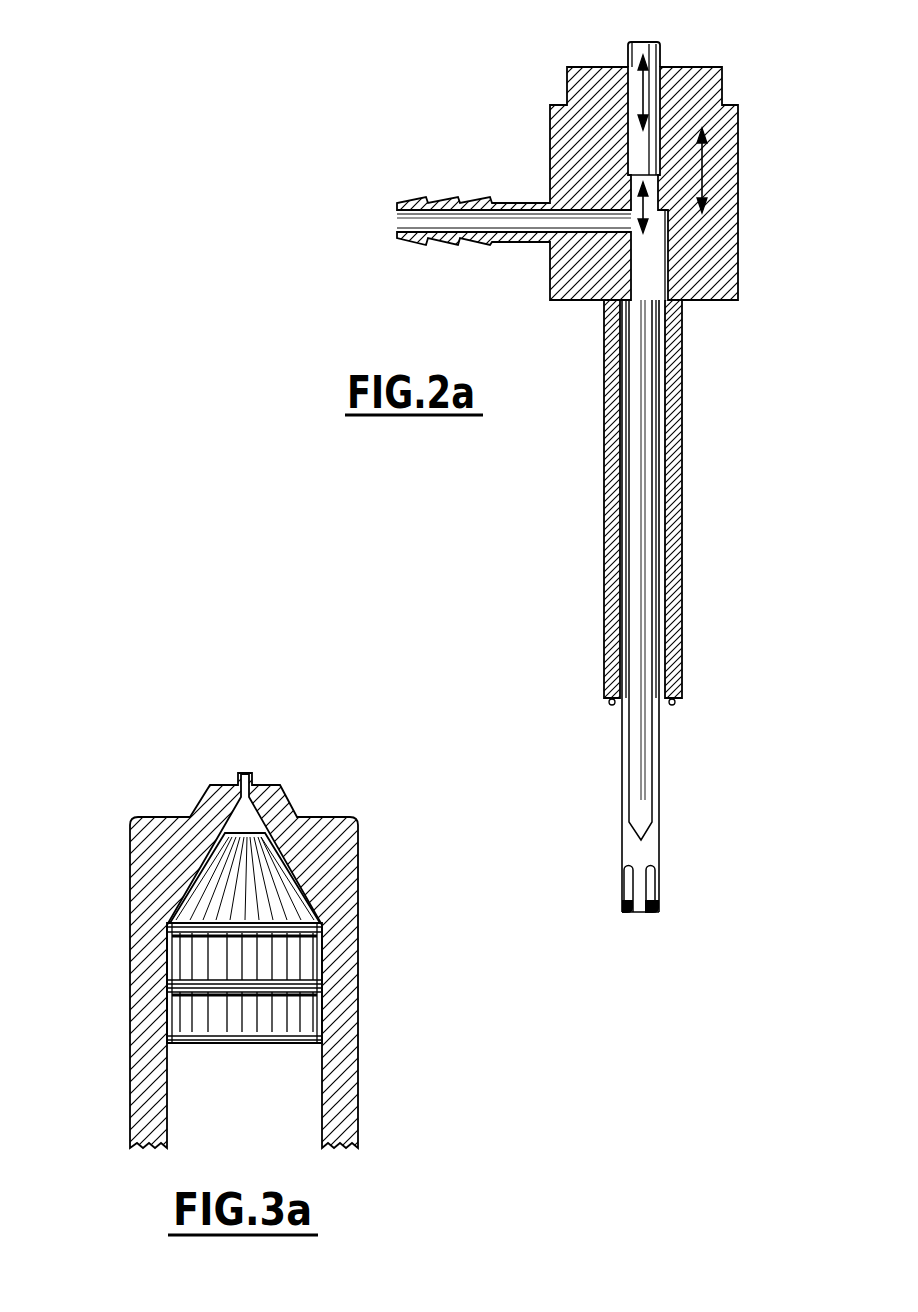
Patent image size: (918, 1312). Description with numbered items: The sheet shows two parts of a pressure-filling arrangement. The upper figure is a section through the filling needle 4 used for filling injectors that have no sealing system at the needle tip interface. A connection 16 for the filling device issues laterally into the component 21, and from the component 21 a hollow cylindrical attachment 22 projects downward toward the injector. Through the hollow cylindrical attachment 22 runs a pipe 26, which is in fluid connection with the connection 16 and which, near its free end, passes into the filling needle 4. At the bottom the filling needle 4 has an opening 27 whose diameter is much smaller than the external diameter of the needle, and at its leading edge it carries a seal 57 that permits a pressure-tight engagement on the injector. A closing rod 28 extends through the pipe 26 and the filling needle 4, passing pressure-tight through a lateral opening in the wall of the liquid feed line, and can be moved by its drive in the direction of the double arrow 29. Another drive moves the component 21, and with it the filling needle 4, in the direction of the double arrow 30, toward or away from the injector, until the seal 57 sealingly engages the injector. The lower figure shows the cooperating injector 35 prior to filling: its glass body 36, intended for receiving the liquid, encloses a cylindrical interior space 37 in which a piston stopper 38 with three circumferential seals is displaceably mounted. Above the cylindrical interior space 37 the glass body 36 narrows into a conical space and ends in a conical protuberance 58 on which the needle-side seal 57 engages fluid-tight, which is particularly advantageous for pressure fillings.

In FIG. 2a, the filling needle 4 is at (740, 833).
In FIG. 2a, the connection 16 is at (450, 243).
In FIG. 2a, the component 21 is at (725, 243).
In FIG. 2a, the hollow cylindrical attachment 22 is at (603, 397).
In FIG. 2a, the pipe 26 is at (660, 452).
In FIG. 2a, the opening 27 is at (647, 881).
In FIG. 2a, the closing rod 28 is at (645, 353).
In FIG. 2a, the double arrow 29 is at (649, 88).
In FIG. 2a, the double arrow 30 is at (703, 163).
In FIG. 2a, the seal 57 is at (655, 908).
In FIG. 3a, the injector 35 is at (392, 916).
In FIG. 3a, the glass body 36 is at (147, 1068).
In FIG. 3a, the cylindrical interior space 37 is at (240, 815).
In FIG. 3a, the piston stopper 38 is at (195, 960).
In FIG. 3a, the conical protuberance 58 is at (238, 777).